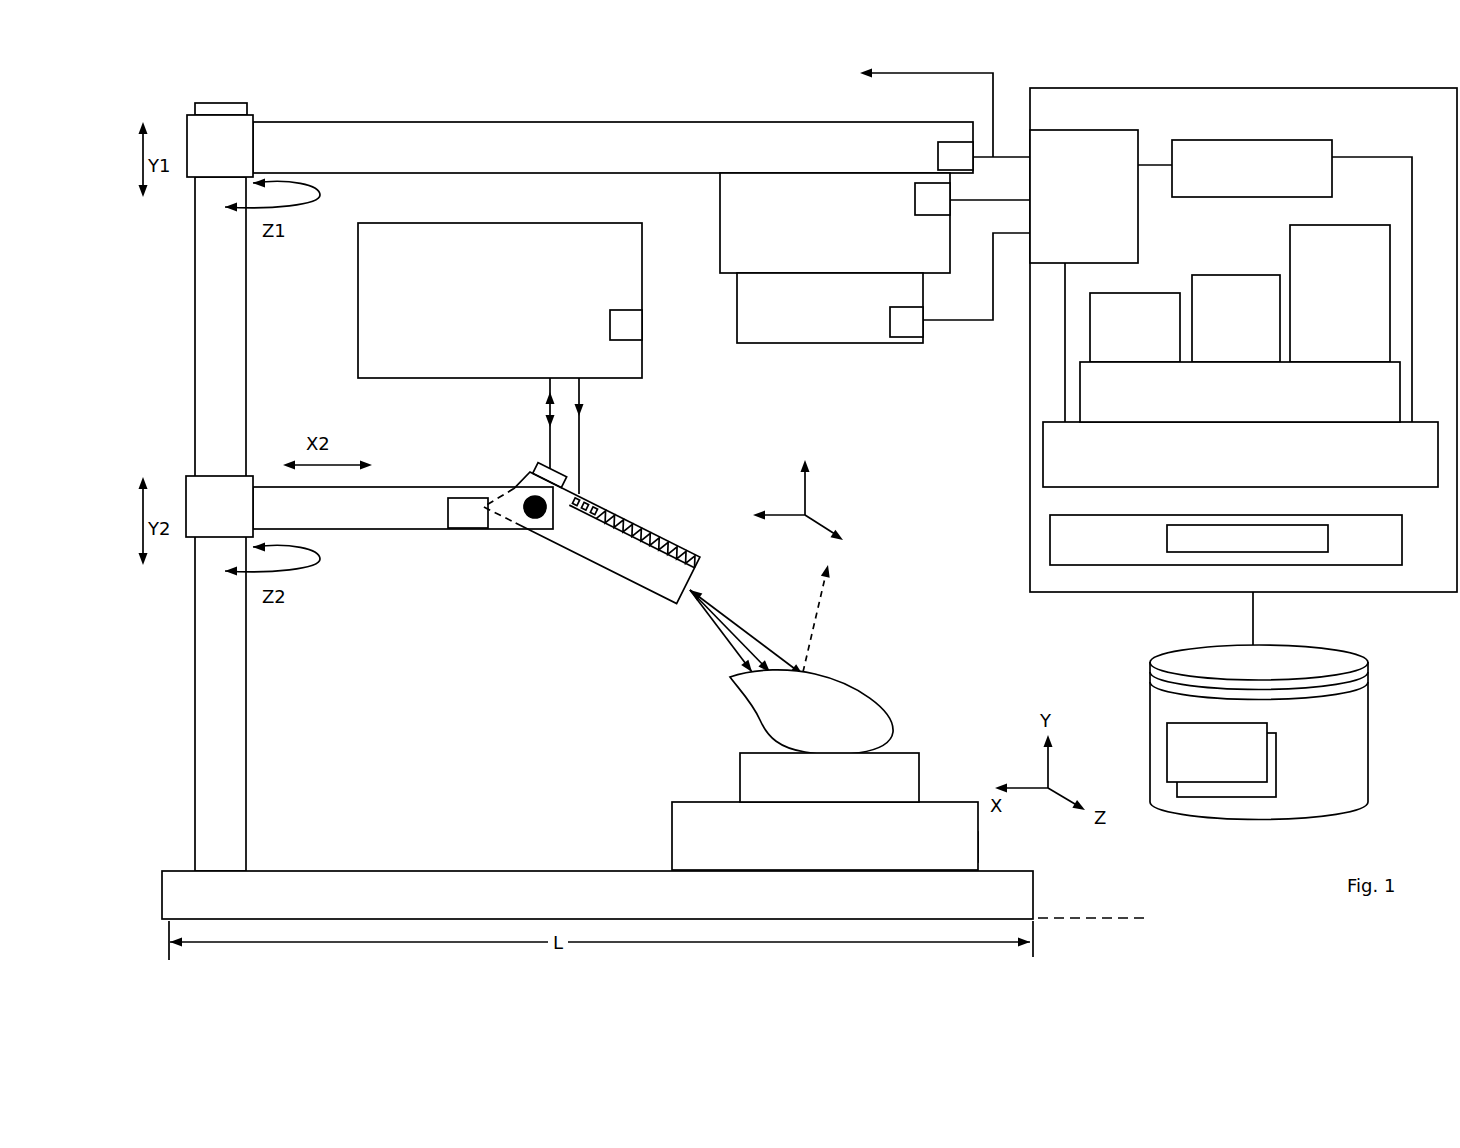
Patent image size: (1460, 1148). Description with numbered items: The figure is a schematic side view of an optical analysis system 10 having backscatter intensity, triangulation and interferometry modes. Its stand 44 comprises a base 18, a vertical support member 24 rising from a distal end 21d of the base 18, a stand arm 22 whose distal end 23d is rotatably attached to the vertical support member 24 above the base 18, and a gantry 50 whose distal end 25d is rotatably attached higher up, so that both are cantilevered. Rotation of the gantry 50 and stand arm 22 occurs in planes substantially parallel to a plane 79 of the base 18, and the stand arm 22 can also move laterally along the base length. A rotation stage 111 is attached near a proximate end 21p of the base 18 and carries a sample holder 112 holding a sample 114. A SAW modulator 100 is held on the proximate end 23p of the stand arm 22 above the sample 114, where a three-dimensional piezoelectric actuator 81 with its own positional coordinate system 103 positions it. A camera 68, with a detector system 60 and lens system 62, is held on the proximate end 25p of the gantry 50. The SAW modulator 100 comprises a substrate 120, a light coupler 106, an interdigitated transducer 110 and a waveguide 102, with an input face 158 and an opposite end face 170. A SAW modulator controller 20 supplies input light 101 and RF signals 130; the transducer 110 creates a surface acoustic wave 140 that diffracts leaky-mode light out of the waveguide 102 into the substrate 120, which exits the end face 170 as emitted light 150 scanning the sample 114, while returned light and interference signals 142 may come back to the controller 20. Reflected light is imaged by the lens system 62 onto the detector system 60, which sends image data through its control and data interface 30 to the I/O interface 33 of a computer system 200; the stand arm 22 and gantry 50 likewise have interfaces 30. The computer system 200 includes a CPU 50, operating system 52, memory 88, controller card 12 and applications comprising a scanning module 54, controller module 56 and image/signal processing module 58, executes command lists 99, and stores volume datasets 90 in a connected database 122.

The optical analysis system 10 is at (1253, 915).
The controller card 12 is at (1252, 168).
The base 18 is at (597, 858).
The SAW modulator controller 20 is at (500, 300).
The distal end of the base 21d is at (162, 884).
The proximate end of the base 21p is at (1034, 893).
The stand arm 22 is at (395, 530).
The distal end of the stand arm 23d is at (190, 482).
The proximate end of the stand arm 23p is at (498, 532).
The vertical support member 24 is at (247, 802).
The distal end of the gantry 25d is at (242, 132).
The proximate end of the gantry 25p is at (950, 122).
The control and data interface 30 is at (960, 803).
The I/O interface 33 is at (1084, 196).
The stand 44 is at (294, 524).
The gantry 50 is at (812, 280).
The operating system 52 is at (1240, 392).
The scanning module 54 is at (1135, 327).
The controller module 56 is at (1236, 318).
The image/signal processing module 58 is at (1340, 293).
The detector system 60 is at (835, 223).
The lens system 62 is at (830, 308).
The camera 68 is at (925, 382).
The plane of the base 79 is at (1140, 915).
The actuator 81 is at (534, 520).
The memory 88 is at (1226, 540).
The volume datasets 90 is at (1221, 760).
The command lists 99 is at (1247, 538).
The SAW modulator 100 is at (567, 567).
The input light 101 is at (543, 423).
The waveguide 102 is at (584, 506).
The positional coordinate system 103 is at (805, 487).
The light coupler 106 is at (550, 475).
The interdigitated transducer 110 is at (667, 438).
The rotation stage 111 is at (803, 805).
The sample holder 112 is at (740, 778).
The sample 114 is at (811, 712).
The substrate 120 is at (584, 516).
The database 122 is at (1280, 645).
The RF signals 130 is at (583, 413).
The surface acoustic wave 140 is at (634, 531).
The interference signals 142 is at (545, 397).
The emitted light 150 is at (732, 670).
The input face 158 is at (520, 477).
The end face 170 is at (646, 627).
The computer system 200 is at (1242, 340).